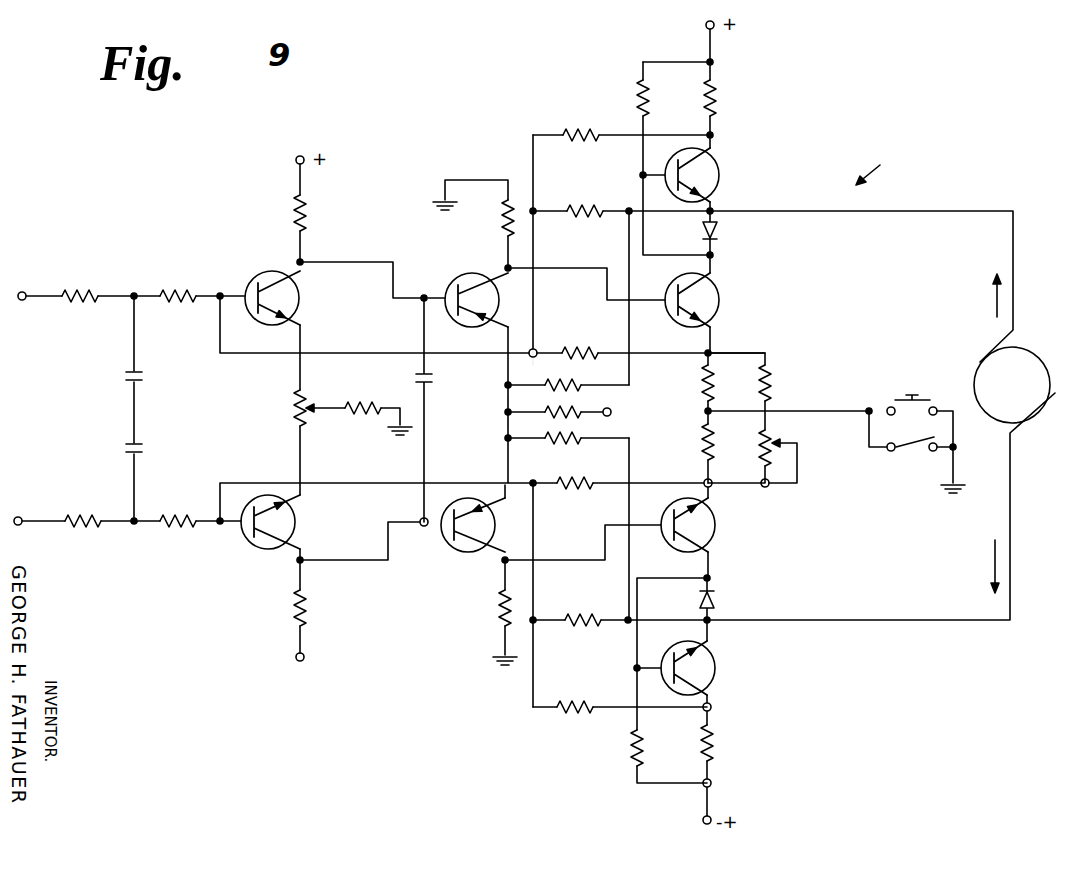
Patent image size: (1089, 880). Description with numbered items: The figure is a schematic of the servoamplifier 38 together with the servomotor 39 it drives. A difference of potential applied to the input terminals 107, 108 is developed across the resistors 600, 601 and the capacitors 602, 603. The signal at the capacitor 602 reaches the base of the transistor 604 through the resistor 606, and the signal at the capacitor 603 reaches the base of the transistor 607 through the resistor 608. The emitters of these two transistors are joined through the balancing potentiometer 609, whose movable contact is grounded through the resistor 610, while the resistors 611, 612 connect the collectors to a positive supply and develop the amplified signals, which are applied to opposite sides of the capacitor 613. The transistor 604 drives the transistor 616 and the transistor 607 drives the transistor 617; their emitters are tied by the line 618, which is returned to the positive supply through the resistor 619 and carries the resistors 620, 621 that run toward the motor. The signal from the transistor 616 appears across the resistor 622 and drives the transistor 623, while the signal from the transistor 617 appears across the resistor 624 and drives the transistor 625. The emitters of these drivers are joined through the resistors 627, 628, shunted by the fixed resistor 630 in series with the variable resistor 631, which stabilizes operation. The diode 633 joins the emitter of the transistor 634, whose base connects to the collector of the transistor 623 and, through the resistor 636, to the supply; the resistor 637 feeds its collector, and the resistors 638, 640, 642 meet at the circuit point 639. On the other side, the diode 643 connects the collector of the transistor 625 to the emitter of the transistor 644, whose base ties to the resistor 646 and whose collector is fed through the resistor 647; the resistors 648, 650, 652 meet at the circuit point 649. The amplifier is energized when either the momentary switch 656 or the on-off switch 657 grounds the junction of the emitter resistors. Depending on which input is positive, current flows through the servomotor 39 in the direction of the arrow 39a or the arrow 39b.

The input terminal 107 is at (38, 295).
The input terminal 108 is at (45, 518).
The resistor 600 is at (98, 295).
The resistor 601 is at (86, 518).
The capacitor 602 is at (141, 378).
The capacitor 603 is at (141, 450).
The transistor 604 is at (300, 303).
The resistor 606 is at (206, 295).
The transistor 607 is at (296, 522).
The resistor 608 is at (195, 500).
The balancing potentiometer 609 is at (296, 410).
The resistor 610 is at (368, 400).
The resistor 611 is at (308, 218).
The resistor 612 is at (306, 612).
The capacitor 613 is at (429, 381).
The transistor 616 is at (475, 273).
The transistor 617 is at (488, 503).
The line 618 is at (507, 402).
The resistor 619 is at (590, 411).
The resistor 620 is at (581, 388).
The resistor 621 is at (590, 437).
The resistor 622 is at (507, 212).
The transistor 623 is at (718, 302).
The resistor 624 is at (500, 616).
The transistor 625 is at (718, 527).
The resistor 627 is at (705, 372).
The resistor 628 is at (702, 452).
The fixed resistor 630 is at (772, 374).
The variable resistor 631 is at (775, 437).
The diode 633 is at (718, 230).
The transistor 634 is at (718, 170).
The resistor 636 is at (643, 88).
The resistor 637 is at (716, 96).
The resistor 638 is at (599, 133).
The circuit point 639 is at (536, 350).
The resistor 640 is at (607, 200).
The resistor 642 is at (560, 352).
The diode 643 is at (716, 600).
The transistor 644 is at (718, 670).
The resistor 646 is at (630, 756).
The resistor 647 is at (716, 752).
The resistor 648 is at (598, 703).
The circuit point 649 is at (534, 487).
The resistor 650 is at (600, 617).
The resistor 652 is at (592, 480).
The switch 656 is at (925, 400).
The switch 657 is at (902, 450).
The servoamplifier 38 is at (885, 165).
The servomotor 39 is at (1040, 356).
The arrow 39a is at (979, 301).
The arrow 39b is at (995, 548).